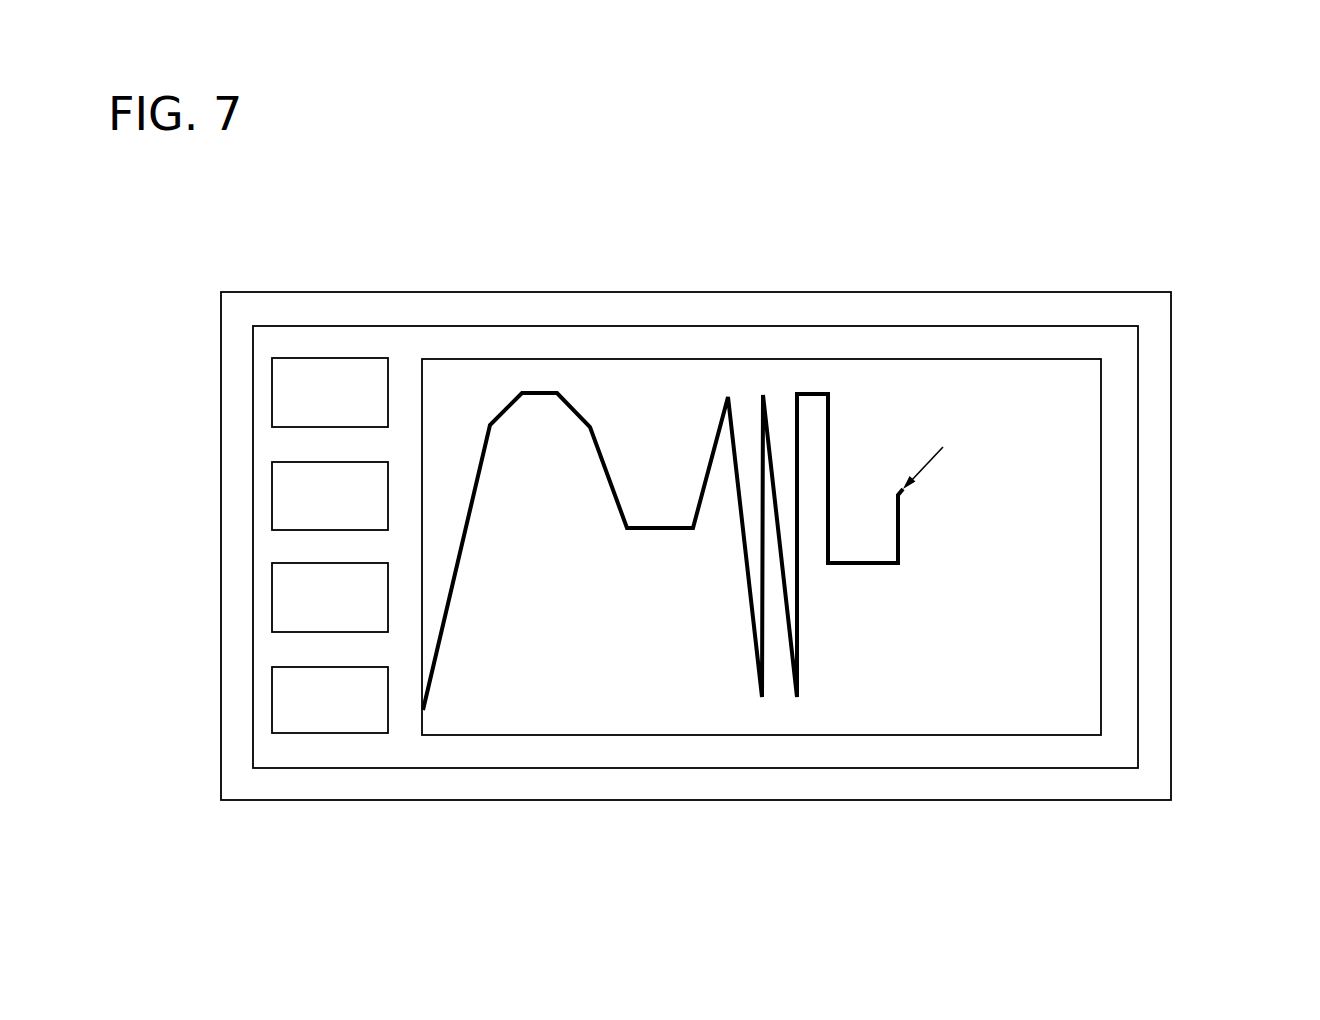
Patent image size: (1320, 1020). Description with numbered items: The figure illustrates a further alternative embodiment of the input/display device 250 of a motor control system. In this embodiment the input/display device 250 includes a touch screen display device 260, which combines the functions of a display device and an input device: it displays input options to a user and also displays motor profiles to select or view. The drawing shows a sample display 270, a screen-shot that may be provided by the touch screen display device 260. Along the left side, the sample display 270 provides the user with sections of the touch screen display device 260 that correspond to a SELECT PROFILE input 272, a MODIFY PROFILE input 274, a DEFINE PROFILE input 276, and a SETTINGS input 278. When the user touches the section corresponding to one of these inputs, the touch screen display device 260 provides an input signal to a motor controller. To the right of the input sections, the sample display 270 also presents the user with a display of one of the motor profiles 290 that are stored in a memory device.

The input/display device 250 is at (1206, 243).
The touch screen display device 260 is at (1138, 482).
The sample display 270 is at (1138, 318).
The SELECT PROFILE input 272 is at (272, 375).
The MODIFY PROFILE input 274 is at (272, 480).
The DEFINE PROFILE input 276 is at (272, 576).
The SETTINGS input 278 is at (272, 676).
The motor profile 290 is at (680, 414).